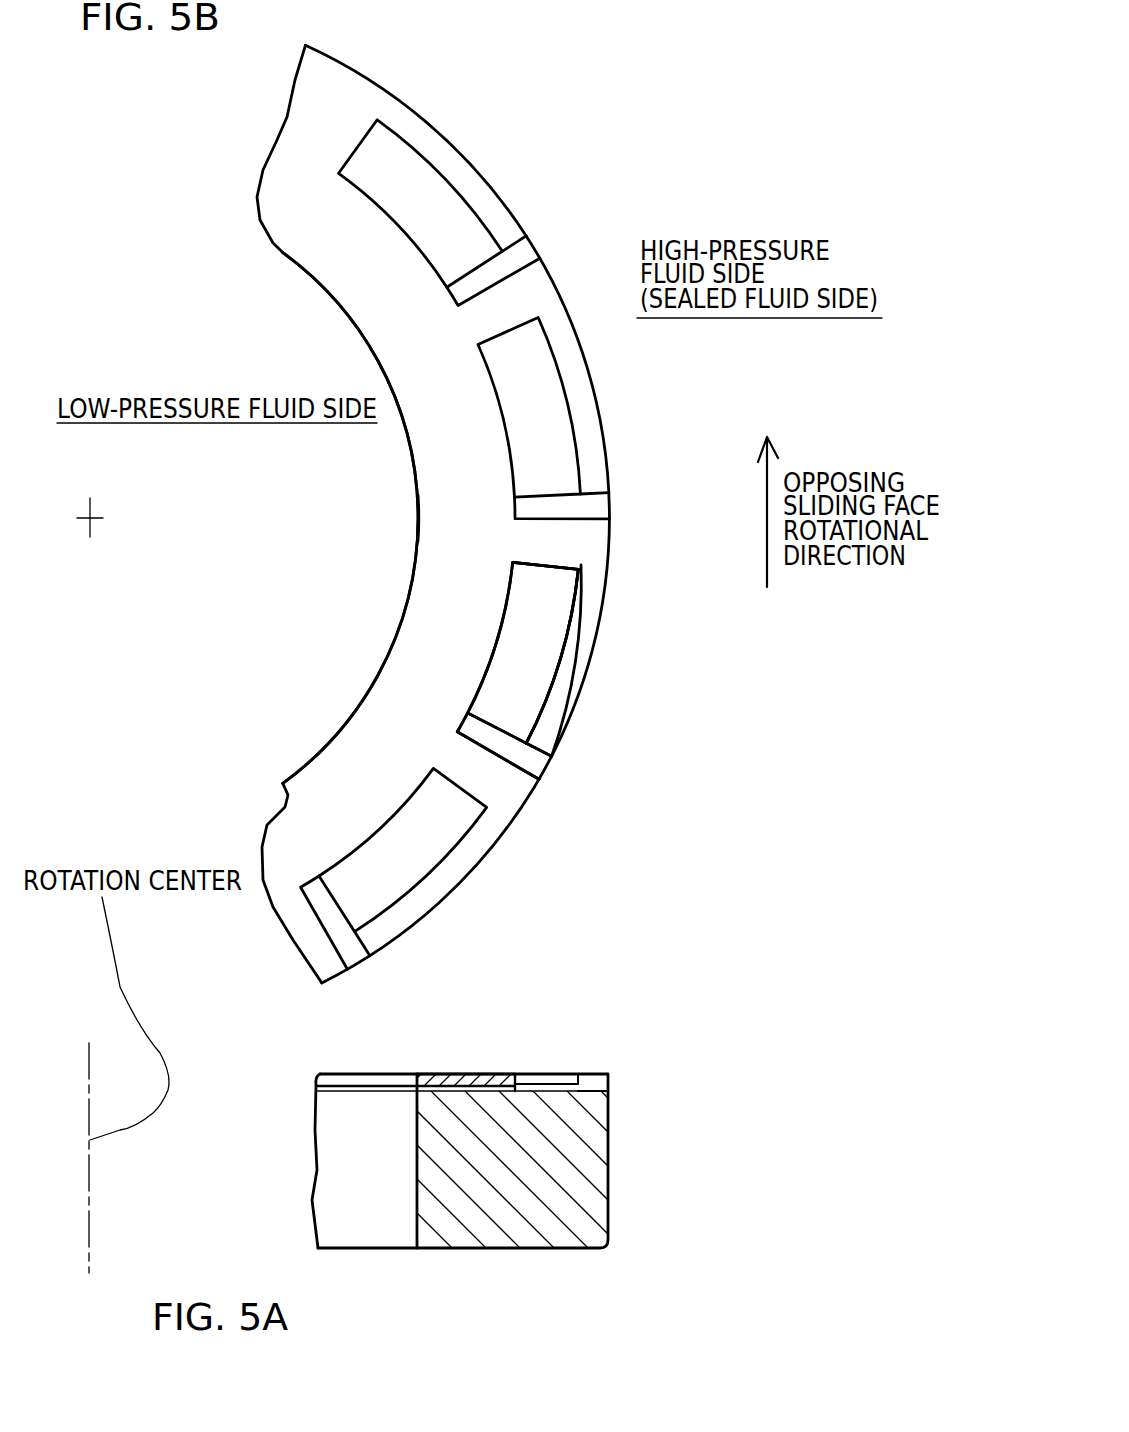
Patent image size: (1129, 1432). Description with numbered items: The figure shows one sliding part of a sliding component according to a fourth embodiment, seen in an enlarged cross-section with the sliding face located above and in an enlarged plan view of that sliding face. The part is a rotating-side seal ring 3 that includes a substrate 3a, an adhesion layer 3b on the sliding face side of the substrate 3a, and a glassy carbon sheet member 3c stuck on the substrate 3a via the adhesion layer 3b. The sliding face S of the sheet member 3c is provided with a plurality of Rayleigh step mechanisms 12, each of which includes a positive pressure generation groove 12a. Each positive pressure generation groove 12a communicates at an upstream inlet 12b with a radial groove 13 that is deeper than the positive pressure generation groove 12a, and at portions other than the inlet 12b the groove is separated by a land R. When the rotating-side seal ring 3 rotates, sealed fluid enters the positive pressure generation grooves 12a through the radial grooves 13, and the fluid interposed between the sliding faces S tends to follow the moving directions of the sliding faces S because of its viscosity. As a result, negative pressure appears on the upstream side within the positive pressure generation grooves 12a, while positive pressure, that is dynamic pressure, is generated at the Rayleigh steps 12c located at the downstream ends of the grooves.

In FIG. 5B, the rotating-side seal ring 3 is at (603, 440).
In FIG. 5A, the rotating-side seal ring 3 is at (610, 1105).
In FIG. 5A, the substrate 3a is at (505, 1242).
In FIG. 5A, the adhesion layer 3b is at (412, 1112).
In FIG. 5A, the glassy carbon sheet member 3c is at (493, 1078).
In FIG. 5B, the Rayleigh step mechanism 12 is at (460, 192).
In FIG. 5B, the positive pressure generation groove 12a is at (545, 640).
In FIG. 5A, the positive pressure generation groove 12a is at (548, 1080).
In FIG. 5B, the upstream inlet 12b is at (502, 730).
In FIG. 5B, the Rayleigh step 12c is at (547, 567).
In FIG. 5B, the radial groove 13 is at (538, 763).
In FIG. 5A, the radial groove 13 is at (558, 1088).
In FIG. 5B, the land R is at (587, 452).
In FIG. 5B, the sliding face S is at (562, 555).
In FIG. 5A, the sliding face S is at (428, 1082).